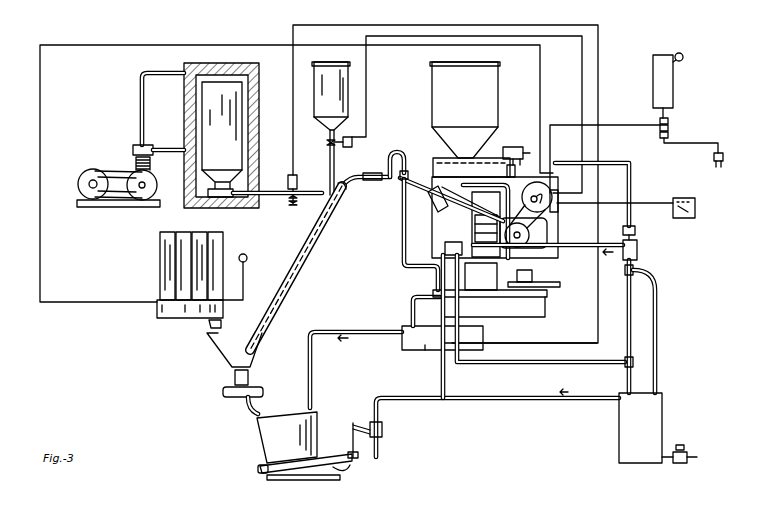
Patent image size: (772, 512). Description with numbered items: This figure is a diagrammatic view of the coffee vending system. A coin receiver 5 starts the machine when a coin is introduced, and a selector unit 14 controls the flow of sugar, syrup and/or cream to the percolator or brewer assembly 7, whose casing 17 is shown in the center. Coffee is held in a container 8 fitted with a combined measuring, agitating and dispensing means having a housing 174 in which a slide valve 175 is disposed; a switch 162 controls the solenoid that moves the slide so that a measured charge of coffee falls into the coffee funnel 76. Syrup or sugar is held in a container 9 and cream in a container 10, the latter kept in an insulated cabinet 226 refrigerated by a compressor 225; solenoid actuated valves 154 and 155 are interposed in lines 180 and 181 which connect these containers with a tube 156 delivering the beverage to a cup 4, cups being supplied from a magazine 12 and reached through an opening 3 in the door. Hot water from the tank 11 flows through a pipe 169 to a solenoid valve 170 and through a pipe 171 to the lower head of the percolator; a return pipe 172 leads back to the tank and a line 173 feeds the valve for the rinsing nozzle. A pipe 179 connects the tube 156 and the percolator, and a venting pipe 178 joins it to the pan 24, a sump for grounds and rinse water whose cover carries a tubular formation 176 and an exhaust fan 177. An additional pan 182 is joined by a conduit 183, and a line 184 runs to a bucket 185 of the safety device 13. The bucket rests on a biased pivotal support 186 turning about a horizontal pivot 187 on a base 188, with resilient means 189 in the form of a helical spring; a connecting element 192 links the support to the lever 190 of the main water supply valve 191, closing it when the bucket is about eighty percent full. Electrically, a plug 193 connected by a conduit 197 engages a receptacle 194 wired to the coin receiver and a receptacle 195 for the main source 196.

The container for cream 10 is at (193, 64).
The insulated cabinet 226 is at (259, 65).
The compressor 225 is at (104, 155).
The solenoid actuated valve 155 is at (288, 178).
The line 181 is at (274, 198).
The container for syrup 9 is at (342, 92).
The line 180 is at (330, 167).
The solenoid actuated valve 154 is at (347, 149).
The container for coffee 8 is at (483, 88).
The switch 162 is at (447, 158).
The housing 174 is at (443, 165).
The percolator or brewer assembly 7 is at (436, 223).
The casing 17 is at (475, 231).
The slide valve 175 is at (533, 177).
The coffee funnel 76 is at (432, 192).
The pipe 179 is at (362, 182).
The pipe 178 is at (403, 224).
The tube 156 is at (300, 258).
The magazine for cups 12 is at (162, 274).
The opening 3 is at (218, 362).
The cup 4 is at (235, 379).
The container or bucket 185 is at (270, 448).
The biased pivotal support 186 is at (320, 463).
The horizontal pivot 187 is at (258, 475).
The base 188 is at (284, 480).
The resilient means 189 is at (345, 471).
The safety device 13 is at (325, 480).
The lever 190 is at (374, 420).
The main water supply valve 191 is at (382, 432).
The connecting element 192 is at (353, 438).
The pipe or line 184 is at (358, 331).
The additional pan 182 is at (420, 350).
The conduit 183 is at (402, 311).
The tubular formation 176 is at (485, 275).
The exhaust fan 177 is at (532, 278).
The pan 24 is at (530, 313).
The pipe 171 is at (574, 248).
The line 173 is at (592, 362).
The return pipe 172 is at (628, 336).
The solenoid valve 170 is at (637, 251).
The pipe 169 is at (657, 302).
The hot water tank 11 is at (625, 433).
The coin receiver 5 is at (667, 88).
The conduit 197 is at (622, 125).
The electrical receptacle 194 is at (668, 120).
The plug 193 is at (668, 127).
The electrical receptacle 195 is at (668, 135).
The main line or source 196 is at (718, 145).
The selector unit 14 is at (695, 209).